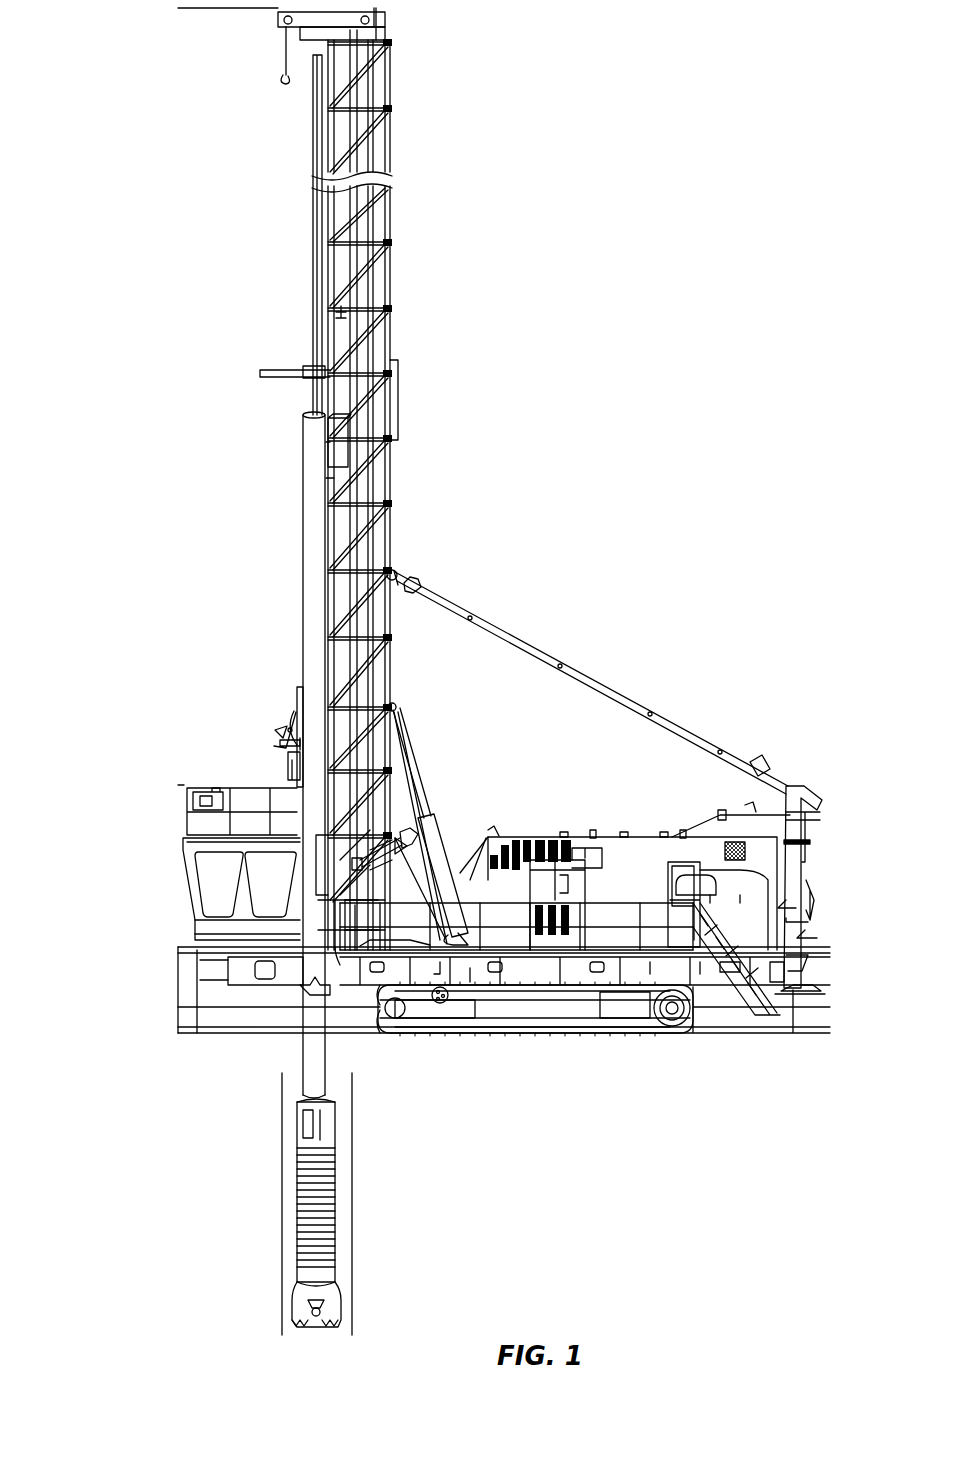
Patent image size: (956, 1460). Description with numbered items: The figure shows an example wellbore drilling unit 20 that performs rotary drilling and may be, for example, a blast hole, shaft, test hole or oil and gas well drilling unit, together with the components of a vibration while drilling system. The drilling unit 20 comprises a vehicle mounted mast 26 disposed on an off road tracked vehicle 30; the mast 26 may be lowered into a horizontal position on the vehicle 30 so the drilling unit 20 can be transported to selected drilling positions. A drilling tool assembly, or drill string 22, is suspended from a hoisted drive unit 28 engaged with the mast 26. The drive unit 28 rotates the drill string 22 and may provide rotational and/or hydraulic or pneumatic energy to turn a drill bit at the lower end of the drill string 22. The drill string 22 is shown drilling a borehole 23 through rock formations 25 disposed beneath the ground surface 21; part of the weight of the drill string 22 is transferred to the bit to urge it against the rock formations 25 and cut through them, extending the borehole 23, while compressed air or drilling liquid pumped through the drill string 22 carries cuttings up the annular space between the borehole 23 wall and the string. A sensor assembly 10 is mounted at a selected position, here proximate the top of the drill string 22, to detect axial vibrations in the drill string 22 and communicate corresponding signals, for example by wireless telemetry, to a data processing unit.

The wellbore drilling unit 20 is at (462, 72).
The mast 26 is at (390, 268).
The drive unit 28 is at (313, 265).
The sensor assembly 10 is at (350, 457).
The tracked vehicle 30 is at (452, 885).
The ground surface 21 is at (708, 1040).
The drill string 22 is at (358, 1073).
The borehole 23 is at (282, 1203).
The rock formations 25 is at (315, 1336).